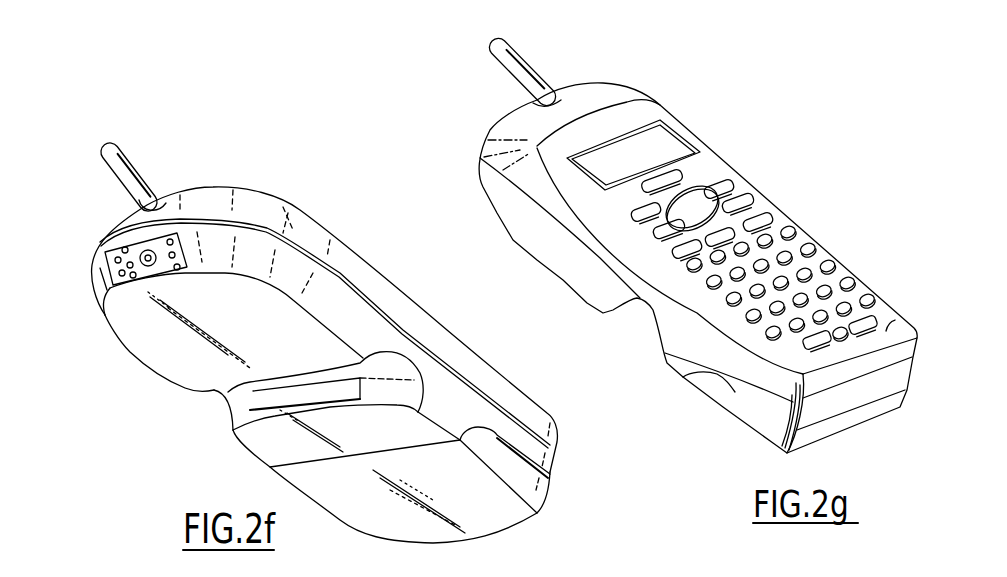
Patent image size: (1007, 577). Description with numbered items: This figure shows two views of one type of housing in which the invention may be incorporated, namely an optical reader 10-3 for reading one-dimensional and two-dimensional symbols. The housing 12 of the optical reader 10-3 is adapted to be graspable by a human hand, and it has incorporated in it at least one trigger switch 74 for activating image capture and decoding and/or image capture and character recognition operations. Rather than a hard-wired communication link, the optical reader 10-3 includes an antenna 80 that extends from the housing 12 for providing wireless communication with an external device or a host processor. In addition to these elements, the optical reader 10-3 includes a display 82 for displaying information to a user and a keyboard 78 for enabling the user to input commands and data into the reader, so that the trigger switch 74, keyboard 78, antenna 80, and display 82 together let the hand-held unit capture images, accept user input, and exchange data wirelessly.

In FIG. 2f, the optical reader 10-3 is at (273, 164).
In FIG. 2g, the optical reader 10-3 is at (751, 108).
In FIG. 2f, the housing 12 is at (367, 323).
In FIG. 2g, the housing 12 is at (560, 260).
In FIG. 2f, the trigger switch 74 is at (233, 407).
In FIG. 2g, the trigger switch 74 is at (700, 207).
In FIG. 2g, the keyboard 78 is at (853, 343).
In FIG. 2f, the antenna 80 is at (143, 170).
In FIG. 2g, the antenna 80 is at (527, 83).
In FIG. 2g, the display 82 is at (667, 153).